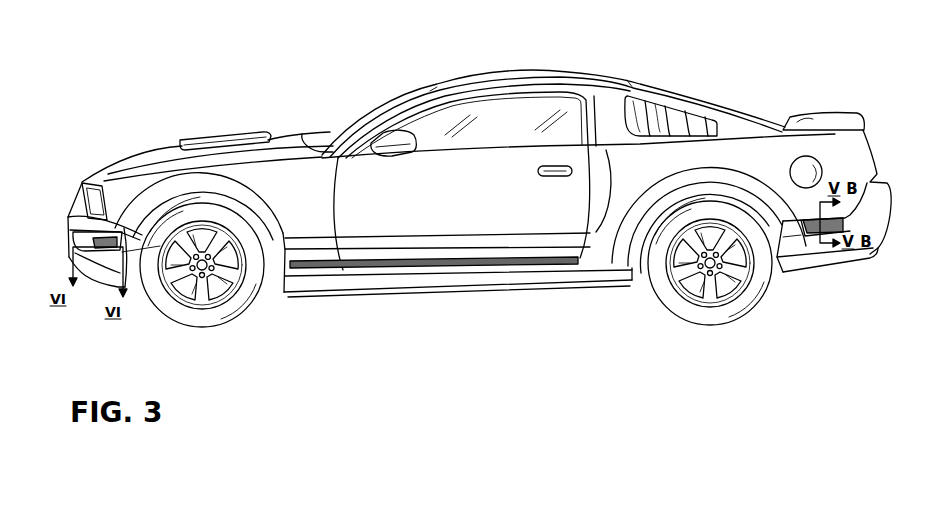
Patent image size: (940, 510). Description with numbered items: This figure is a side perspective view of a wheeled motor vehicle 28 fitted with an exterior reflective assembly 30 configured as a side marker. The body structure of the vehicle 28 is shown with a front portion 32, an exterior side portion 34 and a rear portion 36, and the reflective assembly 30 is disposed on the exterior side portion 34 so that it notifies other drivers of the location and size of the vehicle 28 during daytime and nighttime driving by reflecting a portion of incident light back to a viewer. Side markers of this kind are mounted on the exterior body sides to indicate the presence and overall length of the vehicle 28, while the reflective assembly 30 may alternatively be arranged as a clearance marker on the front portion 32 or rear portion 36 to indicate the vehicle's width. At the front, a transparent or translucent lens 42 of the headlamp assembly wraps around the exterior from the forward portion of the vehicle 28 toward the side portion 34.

The vehicle 28 is at (533, 70).
The reflective assembly 30 is at (96, 254).
The front portion 32 is at (77, 197).
The side portion 34 is at (398, 252).
The rear portion 36 is at (873, 155).
The lens 42 is at (850, 223).